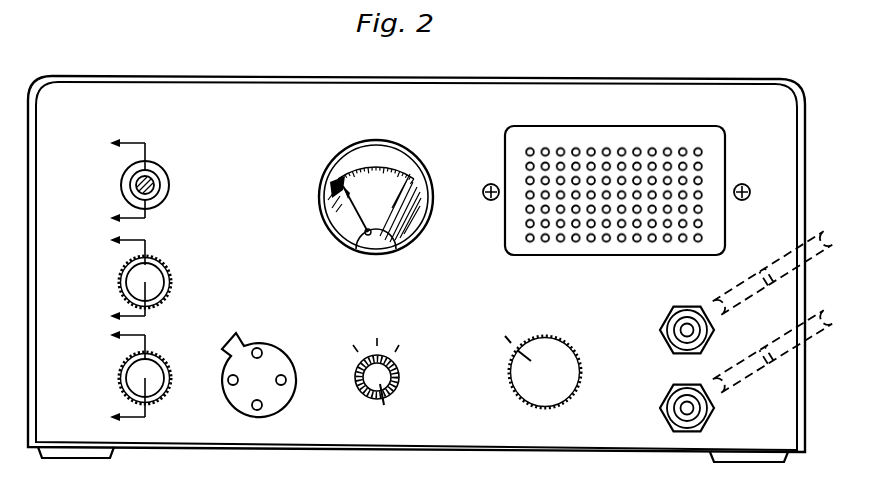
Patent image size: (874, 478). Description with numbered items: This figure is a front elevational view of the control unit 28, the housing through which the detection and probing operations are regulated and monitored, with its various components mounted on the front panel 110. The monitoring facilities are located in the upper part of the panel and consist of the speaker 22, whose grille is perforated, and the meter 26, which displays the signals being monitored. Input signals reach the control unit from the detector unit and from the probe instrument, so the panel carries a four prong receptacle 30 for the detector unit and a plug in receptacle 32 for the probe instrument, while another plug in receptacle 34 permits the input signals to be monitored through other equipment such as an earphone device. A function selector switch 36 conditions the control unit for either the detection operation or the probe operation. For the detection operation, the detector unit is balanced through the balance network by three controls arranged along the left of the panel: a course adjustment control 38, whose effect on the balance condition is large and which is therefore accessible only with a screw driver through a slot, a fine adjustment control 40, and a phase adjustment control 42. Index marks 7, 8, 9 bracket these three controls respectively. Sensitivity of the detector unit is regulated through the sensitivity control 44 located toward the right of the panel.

The coarse adjustment index marks 7 is at (119, 182).
The fine adjustment index marks 8 is at (116, 282).
The phase adjustment index marks 9 is at (119, 379).
The speaker 22 is at (606, 150).
The meter 26 is at (333, 146).
The control unit 28 is at (533, 78).
The detector connector 30 is at (278, 397).
The plug in receptacle 32 is at (670, 314).
The plug in receptacle 34 is at (664, 420).
The function selector switch 36 is at (377, 373).
The course adjustment control 38 is at (162, 187).
The fine adjustment control 40 is at (181, 270).
The phase adjustment control 42 is at (175, 401).
The sensitivity control 44 is at (534, 416).
The front panel 110 is at (446, 110).